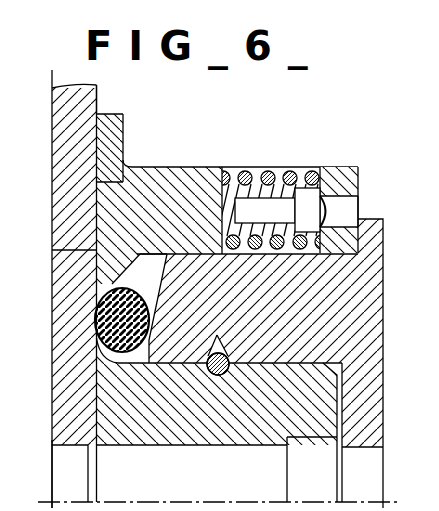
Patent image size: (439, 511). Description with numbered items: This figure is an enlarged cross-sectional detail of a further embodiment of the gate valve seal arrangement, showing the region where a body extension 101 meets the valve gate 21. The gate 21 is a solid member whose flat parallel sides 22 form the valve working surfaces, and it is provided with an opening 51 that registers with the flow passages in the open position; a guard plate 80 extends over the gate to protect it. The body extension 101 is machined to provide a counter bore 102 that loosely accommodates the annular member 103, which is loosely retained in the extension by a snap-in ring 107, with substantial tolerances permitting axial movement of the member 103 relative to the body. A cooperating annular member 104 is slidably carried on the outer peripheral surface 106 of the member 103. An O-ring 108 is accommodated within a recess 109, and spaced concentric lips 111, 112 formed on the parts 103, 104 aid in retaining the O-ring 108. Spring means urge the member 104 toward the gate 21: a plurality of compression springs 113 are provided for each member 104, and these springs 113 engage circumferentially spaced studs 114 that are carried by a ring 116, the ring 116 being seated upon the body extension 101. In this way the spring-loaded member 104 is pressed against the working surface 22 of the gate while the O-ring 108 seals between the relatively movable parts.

The valve gate 21 is at (63, 147).
The flat parallel sides 22 is at (97, 97).
The opening 51 is at (58, 468).
The metal plates 80 is at (115, 128).
The body extensions 101 is at (362, 430).
The counter bores 102 is at (268, 363).
The annular members 103 is at (137, 430).
The cooperating annular members 104 is at (160, 170).
The outer peripheral surfaces 106 is at (190, 250).
The snap-in rings 107 is at (218, 372).
The O-rings 108 is at (100, 317).
The recesses 109 is at (127, 282).
The concentric lip 111 is at (105, 268).
The concentric lip 112 is at (100, 352).
The compression springs 113 is at (272, 159).
The studs 114 is at (338, 203).
The rings 116 is at (328, 167).